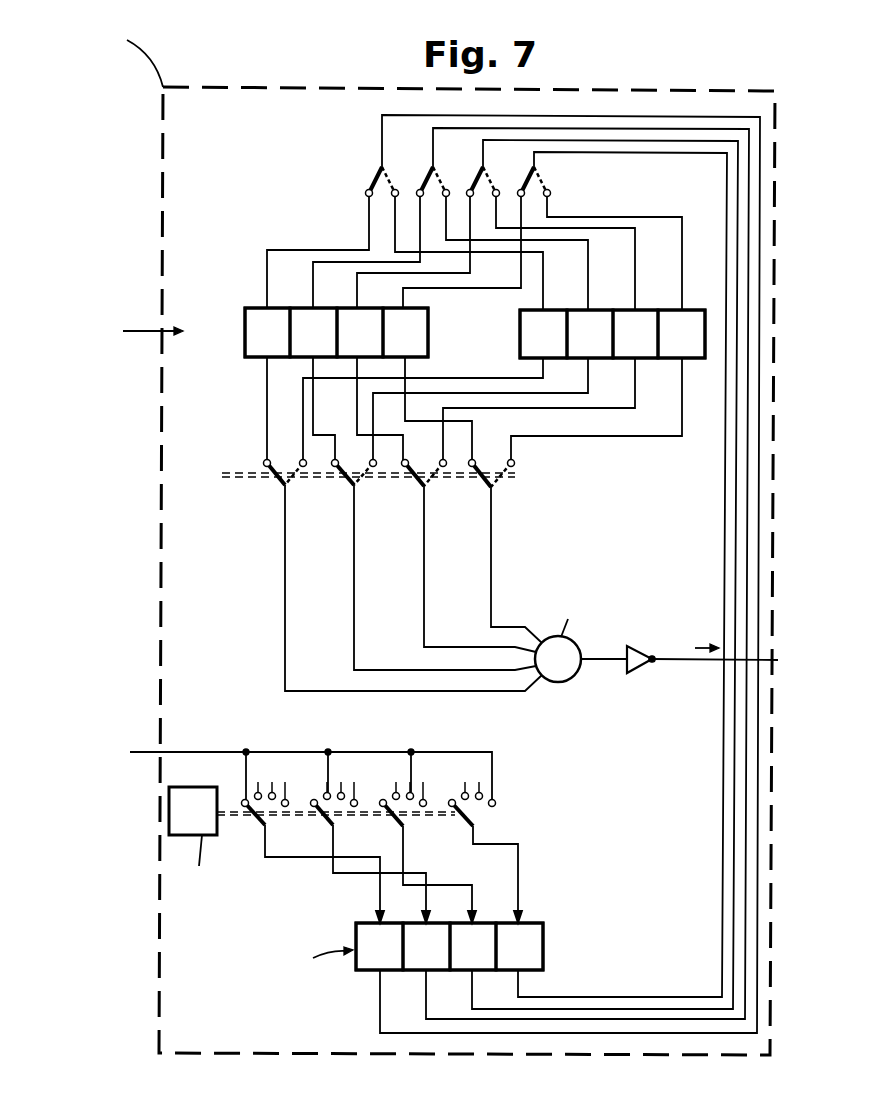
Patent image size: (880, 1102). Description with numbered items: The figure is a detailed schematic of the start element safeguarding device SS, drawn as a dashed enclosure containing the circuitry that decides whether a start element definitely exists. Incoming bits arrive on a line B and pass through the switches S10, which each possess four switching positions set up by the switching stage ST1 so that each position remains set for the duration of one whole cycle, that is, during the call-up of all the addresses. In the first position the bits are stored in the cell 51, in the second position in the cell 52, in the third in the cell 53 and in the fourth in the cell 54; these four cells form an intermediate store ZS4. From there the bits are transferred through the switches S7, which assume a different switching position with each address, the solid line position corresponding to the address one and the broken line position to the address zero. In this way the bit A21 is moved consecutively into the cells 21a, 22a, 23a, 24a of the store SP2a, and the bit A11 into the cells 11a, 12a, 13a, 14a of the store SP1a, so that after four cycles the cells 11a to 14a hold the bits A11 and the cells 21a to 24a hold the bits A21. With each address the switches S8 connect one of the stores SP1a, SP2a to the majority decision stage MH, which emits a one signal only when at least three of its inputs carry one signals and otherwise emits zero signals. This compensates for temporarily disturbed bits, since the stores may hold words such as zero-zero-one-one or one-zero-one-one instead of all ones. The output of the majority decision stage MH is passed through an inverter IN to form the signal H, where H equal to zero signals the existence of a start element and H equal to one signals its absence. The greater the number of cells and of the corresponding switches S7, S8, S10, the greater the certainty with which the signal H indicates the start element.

The start element safeguarding device SS is at (250, 87).
The switches S7 is at (447, 177).
The store SP1a is at (245, 331).
The store SP2a is at (519, 332).
The cell 11a is at (267, 332).
The cell 12a is at (313, 332).
The cell 13a is at (360, 332).
The cell 14a is at (405, 332).
The cell 21a is at (543, 334).
The cell 22a is at (590, 334).
The cell 23a is at (635, 334).
The cell 24a is at (681, 334).
The switches S8 is at (382, 482).
The majority decision stage MH is at (577, 621).
The inverter IN is at (641, 677).
The signal H is at (699, 648).
The control line B is at (311, 760).
The control stage ST1 is at (220, 849).
The switches S10 is at (373, 812).
The intermediate store ZS4 is at (545, 949).
The cell 51 is at (379, 946).
The cell 52 is at (426, 946).
The cell 53 is at (473, 946).
The cell 54 is at (519, 946).